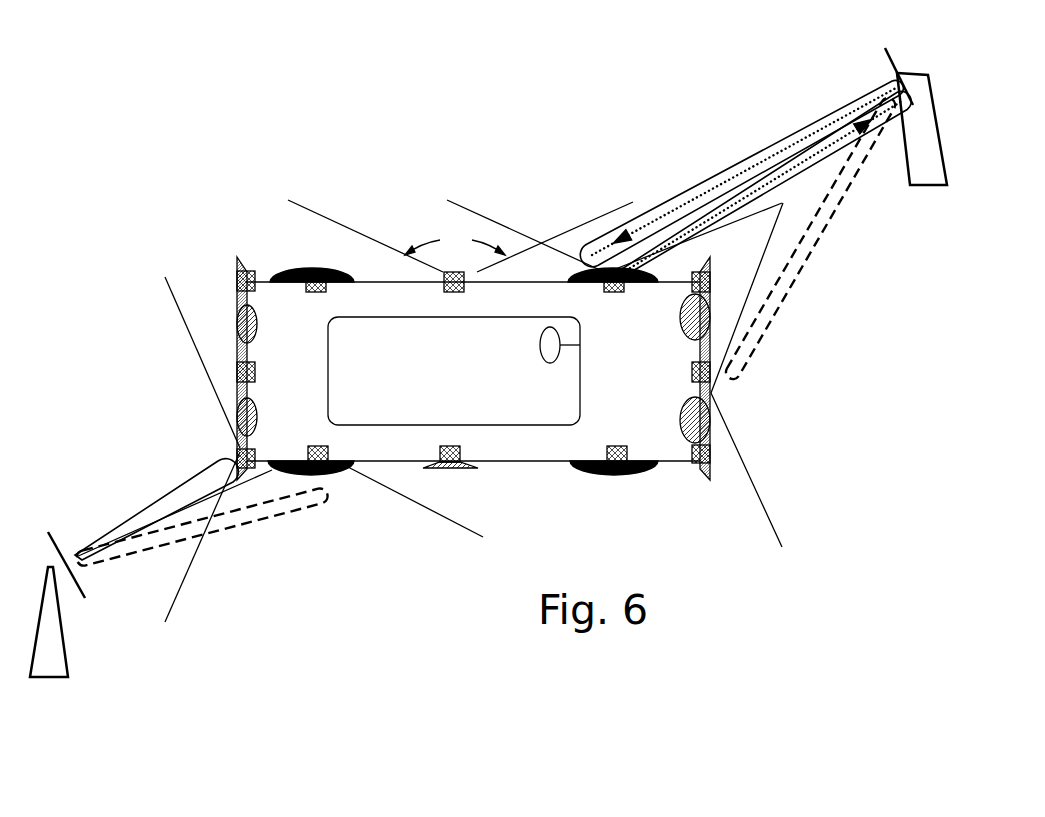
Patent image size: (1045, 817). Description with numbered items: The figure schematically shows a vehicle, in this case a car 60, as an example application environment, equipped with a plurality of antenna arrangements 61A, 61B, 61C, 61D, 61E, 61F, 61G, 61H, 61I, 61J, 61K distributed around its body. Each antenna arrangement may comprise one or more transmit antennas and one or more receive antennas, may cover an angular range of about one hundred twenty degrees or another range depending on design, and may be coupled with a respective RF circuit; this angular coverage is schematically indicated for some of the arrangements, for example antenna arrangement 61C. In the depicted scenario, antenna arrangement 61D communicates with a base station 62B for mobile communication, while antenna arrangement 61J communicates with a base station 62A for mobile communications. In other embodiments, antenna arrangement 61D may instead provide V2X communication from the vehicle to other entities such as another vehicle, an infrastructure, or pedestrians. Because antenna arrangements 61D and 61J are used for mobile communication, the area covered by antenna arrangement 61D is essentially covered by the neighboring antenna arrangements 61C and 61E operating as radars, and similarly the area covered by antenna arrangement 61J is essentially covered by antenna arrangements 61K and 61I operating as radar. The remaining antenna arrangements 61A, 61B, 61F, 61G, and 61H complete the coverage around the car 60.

The car 60 is at (528, 460).
The antenna arrangement 61A is at (238, 270).
The antenna arrangement 61B is at (320, 270).
The antenna arrangement 61C is at (443, 272).
The antenna arrangement 61D is at (602, 273).
The antenna arrangement 61E is at (707, 284).
The antenna arrangement 61F is at (707, 470).
The antenna arrangement 61G is at (627, 475).
The antenna arrangement 61H is at (452, 470).
The antenna arrangement 61I is at (318, 455).
The antenna arrangement 61J is at (238, 450).
The antenna arrangement 61K is at (237, 363).
The base station 62A is at (63, 633).
The base station 62B is at (923, 183).